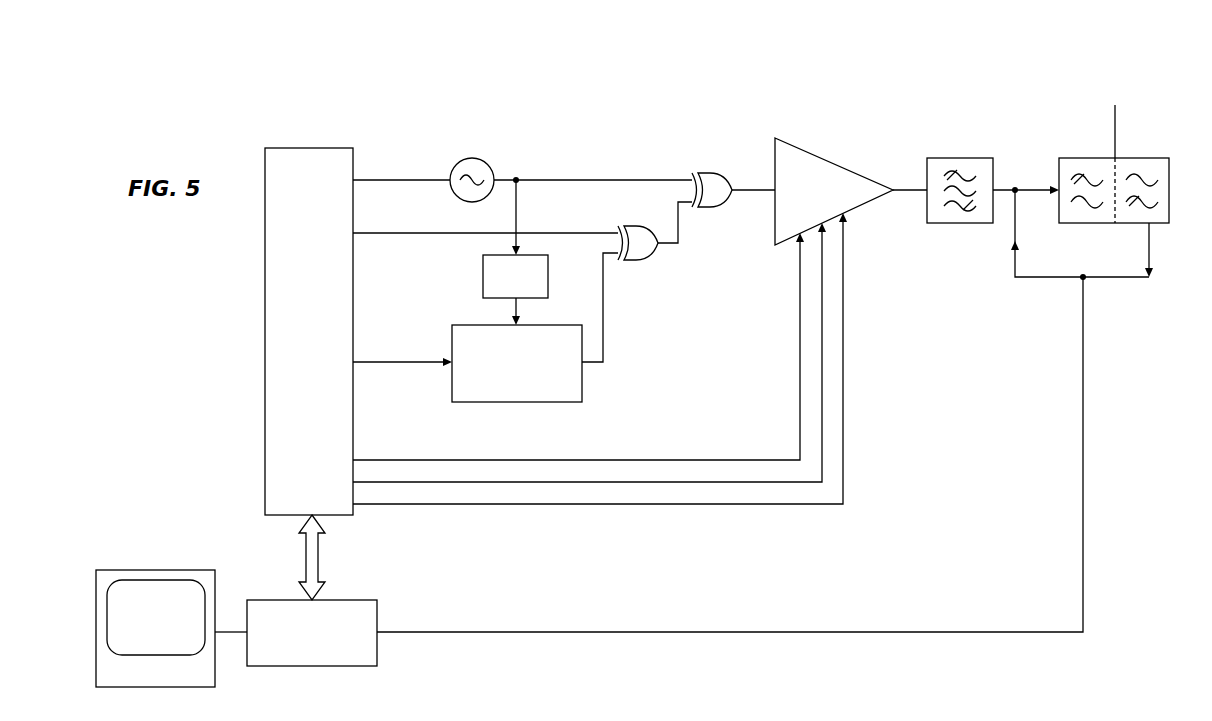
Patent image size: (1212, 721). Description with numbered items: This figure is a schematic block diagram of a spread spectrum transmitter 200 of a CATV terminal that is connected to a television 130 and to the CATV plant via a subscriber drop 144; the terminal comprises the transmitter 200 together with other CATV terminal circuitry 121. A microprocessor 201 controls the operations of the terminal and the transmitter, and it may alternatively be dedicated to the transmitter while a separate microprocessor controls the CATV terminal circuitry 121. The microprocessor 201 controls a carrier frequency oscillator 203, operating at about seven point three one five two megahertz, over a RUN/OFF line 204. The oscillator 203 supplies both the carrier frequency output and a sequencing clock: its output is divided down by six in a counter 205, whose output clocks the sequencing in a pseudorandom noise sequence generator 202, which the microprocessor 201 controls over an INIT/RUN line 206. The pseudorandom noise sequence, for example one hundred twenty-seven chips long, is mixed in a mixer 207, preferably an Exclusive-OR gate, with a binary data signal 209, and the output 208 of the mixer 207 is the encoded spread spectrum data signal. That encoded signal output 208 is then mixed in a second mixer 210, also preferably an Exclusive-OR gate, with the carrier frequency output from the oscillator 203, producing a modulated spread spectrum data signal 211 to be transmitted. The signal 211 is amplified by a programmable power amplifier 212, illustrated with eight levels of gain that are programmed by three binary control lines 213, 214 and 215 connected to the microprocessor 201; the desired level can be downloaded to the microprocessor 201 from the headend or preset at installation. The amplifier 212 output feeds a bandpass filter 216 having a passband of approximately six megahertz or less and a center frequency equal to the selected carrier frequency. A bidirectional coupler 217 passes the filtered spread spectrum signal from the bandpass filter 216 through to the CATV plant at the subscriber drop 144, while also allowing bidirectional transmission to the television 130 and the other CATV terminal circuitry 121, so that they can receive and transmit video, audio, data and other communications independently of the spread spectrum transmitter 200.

The spread spectrum transmitter 200 is at (610, 124).
The microprocessor 201 is at (283, 263).
The pseudorandom noise sequence generator 202 is at (470, 332).
The carrier frequency oscillator 203 is at (490, 166).
The RUN/OFF line 204 is at (380, 170).
The counter 205 is at (550, 290).
The INIT/RUN line 206 is at (378, 368).
The mixer 207 is at (640, 262).
The output of mixer 208 is at (683, 232).
The binary data signal 209 is at (590, 232).
The mixer 210 is at (705, 175).
The modulated spread spectrum data signal 211 is at (745, 188).
The programmable power amplifier 212 is at (850, 165).
The binary control line 213 is at (608, 503).
The binary control line 214 is at (653, 482).
The binary control line 215 is at (717, 460).
The bandpass filter 216 is at (995, 170).
The bidirectional coupler 217 is at (1170, 170).
The subscriber drop 144 is at (1116, 135).
The television 130 is at (157, 570).
The CATV terminal circuitry 121 is at (335, 668).